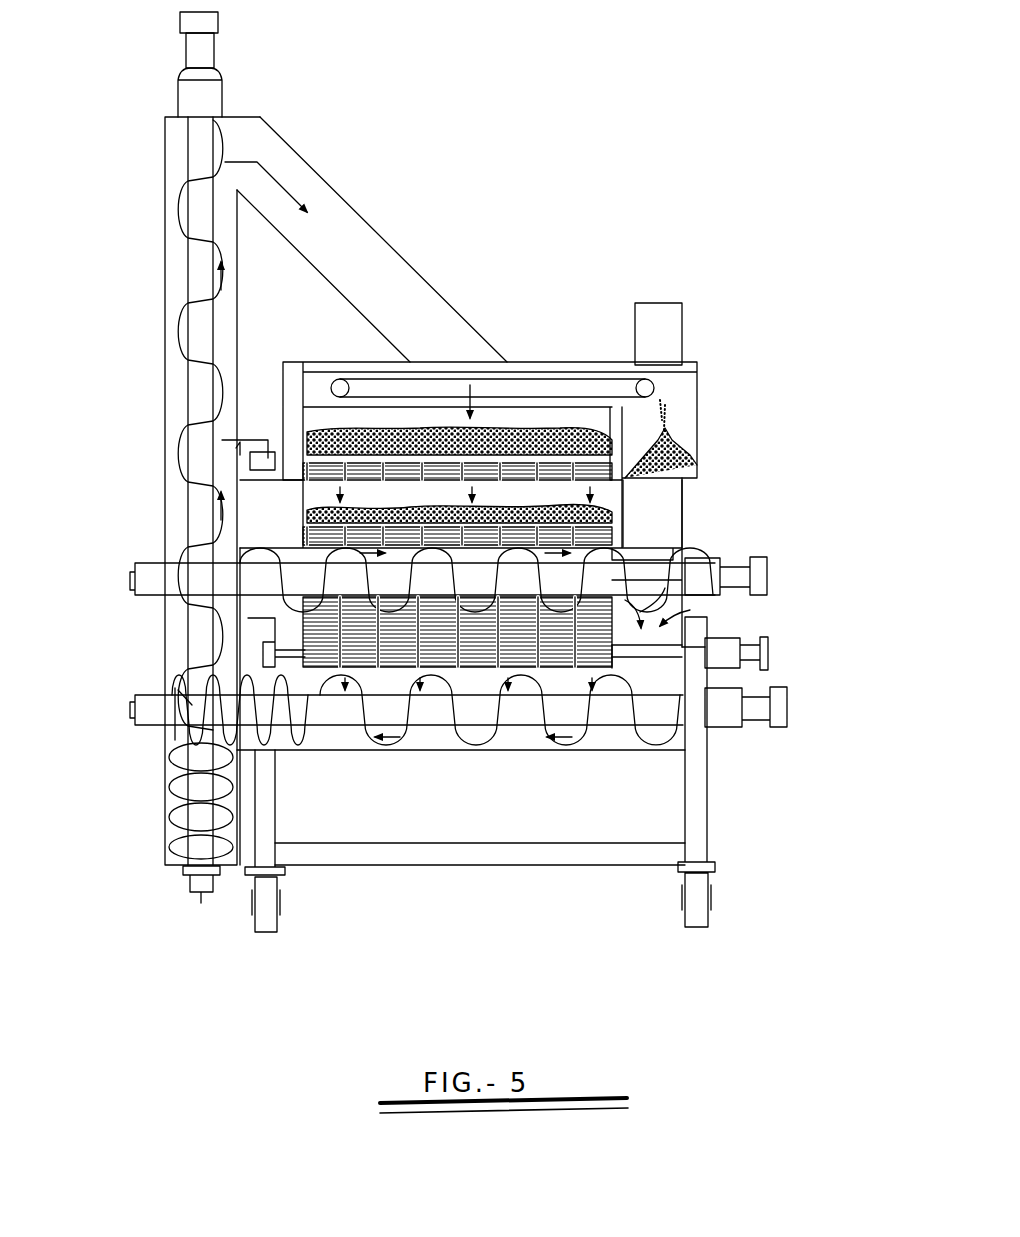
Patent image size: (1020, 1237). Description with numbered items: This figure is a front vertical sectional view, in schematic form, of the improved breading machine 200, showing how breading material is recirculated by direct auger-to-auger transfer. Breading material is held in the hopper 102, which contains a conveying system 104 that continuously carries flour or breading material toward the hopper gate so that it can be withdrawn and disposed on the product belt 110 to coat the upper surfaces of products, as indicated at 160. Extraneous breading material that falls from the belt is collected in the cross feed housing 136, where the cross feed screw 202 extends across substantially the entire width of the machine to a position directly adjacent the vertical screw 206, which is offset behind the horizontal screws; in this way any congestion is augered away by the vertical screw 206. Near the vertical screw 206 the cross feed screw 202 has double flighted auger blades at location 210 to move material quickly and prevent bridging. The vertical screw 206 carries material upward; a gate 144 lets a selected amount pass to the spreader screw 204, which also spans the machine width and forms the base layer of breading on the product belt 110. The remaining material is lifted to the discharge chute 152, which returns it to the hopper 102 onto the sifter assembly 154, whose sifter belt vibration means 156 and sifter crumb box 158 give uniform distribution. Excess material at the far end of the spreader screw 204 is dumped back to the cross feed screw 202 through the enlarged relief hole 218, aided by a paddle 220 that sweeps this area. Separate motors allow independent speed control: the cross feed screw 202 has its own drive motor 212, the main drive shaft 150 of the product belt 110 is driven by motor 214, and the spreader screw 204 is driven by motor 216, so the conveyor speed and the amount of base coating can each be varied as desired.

The breading machine 200 is at (567, 155).
The discharge chute 152 is at (335, 180).
The vertical screw 206 is at (180, 290).
The sifter assembly 154 is at (350, 385).
The hopper 102 is at (520, 362).
The sifter belt vibration means 156 is at (610, 385).
The sifter crumb box 158 is at (697, 400).
The conveying system 104 is at (605, 438).
The gate 144 is at (180, 462).
The coated upper surface of products 160 is at (335, 505).
The paddle 220 is at (672, 540).
The spreader screw 204 is at (672, 580).
The spreader screw drive motor 216 is at (767, 585).
The relief hole 218 is at (672, 603).
The main drive shaft motor 214 is at (768, 655).
The cross feed screw drive motor 212 is at (787, 712).
The double flighted auger blade location 210 is at (185, 705).
The cross feed housing 136 is at (350, 750).
The product belt 110 is at (445, 675).
The cross feed screw 202 is at (515, 735).
The main drive shaft 150 is at (660, 655).